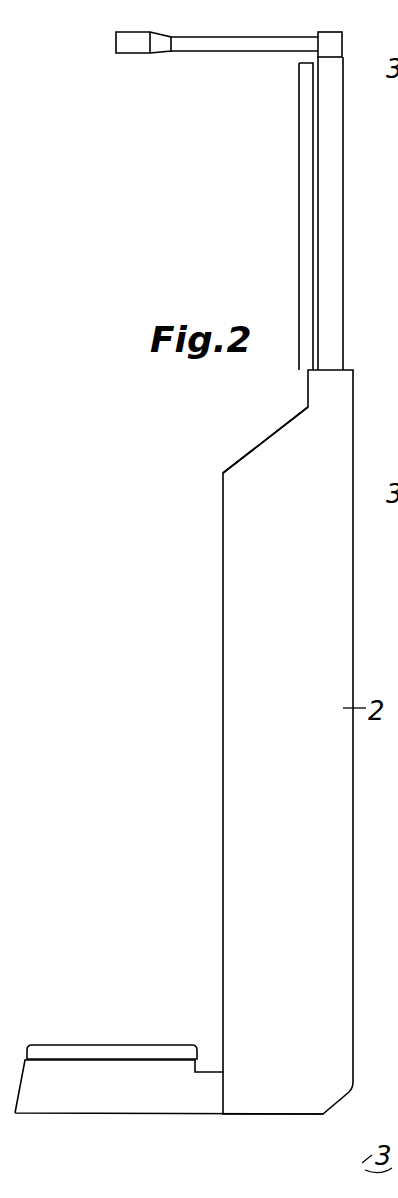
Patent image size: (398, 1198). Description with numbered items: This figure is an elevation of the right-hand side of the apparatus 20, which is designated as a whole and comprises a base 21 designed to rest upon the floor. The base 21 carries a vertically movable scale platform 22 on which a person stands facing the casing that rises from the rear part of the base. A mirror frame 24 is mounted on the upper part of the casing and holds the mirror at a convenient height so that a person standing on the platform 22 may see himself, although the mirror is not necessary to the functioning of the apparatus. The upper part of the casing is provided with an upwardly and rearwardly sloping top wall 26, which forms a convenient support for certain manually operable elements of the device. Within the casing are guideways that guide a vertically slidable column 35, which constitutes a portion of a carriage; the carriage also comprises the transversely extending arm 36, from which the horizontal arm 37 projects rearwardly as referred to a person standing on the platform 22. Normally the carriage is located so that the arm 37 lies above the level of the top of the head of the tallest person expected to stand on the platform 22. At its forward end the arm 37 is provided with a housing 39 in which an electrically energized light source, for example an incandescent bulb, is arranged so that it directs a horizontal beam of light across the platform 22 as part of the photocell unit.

The apparatus 20 is at (212, 652).
The base 21 is at (147, 1105).
The scale platform 22 is at (123, 1052).
The mirror frame 24 is at (299, 242).
The top wall 26 is at (256, 447).
The column 35 is at (343, 218).
The transversely extending arm 36 is at (343, 43).
The arm 37 is at (215, 55).
The housing 39 is at (127, 56).